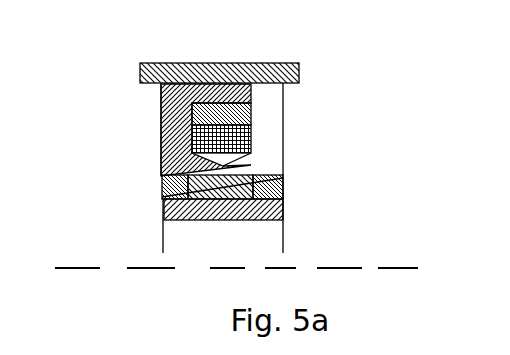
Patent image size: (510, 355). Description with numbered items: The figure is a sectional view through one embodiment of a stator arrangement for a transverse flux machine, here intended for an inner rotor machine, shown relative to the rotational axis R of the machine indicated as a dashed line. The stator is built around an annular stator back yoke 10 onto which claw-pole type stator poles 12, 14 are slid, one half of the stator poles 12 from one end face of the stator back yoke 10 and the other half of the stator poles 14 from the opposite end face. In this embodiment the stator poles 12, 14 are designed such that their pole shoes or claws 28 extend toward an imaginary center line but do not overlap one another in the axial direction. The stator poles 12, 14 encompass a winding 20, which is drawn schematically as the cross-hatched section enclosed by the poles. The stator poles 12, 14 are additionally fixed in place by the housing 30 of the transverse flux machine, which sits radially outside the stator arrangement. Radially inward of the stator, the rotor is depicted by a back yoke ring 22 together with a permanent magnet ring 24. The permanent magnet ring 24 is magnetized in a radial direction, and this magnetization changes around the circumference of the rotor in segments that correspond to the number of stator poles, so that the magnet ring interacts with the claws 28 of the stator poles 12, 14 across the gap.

The stator back yoke 10 is at (252, 108).
The stator pole 12 is at (260, 97).
The stator pole 14 is at (172, 150).
The winding 20 is at (161, 128).
The back yoke ring 22 is at (283, 215).
The permanent magnet ring 24 is at (283, 183).
The pole shoe 28 is at (163, 198).
The housing 30 is at (202, 63).
The rotational axis R is at (80, 270).